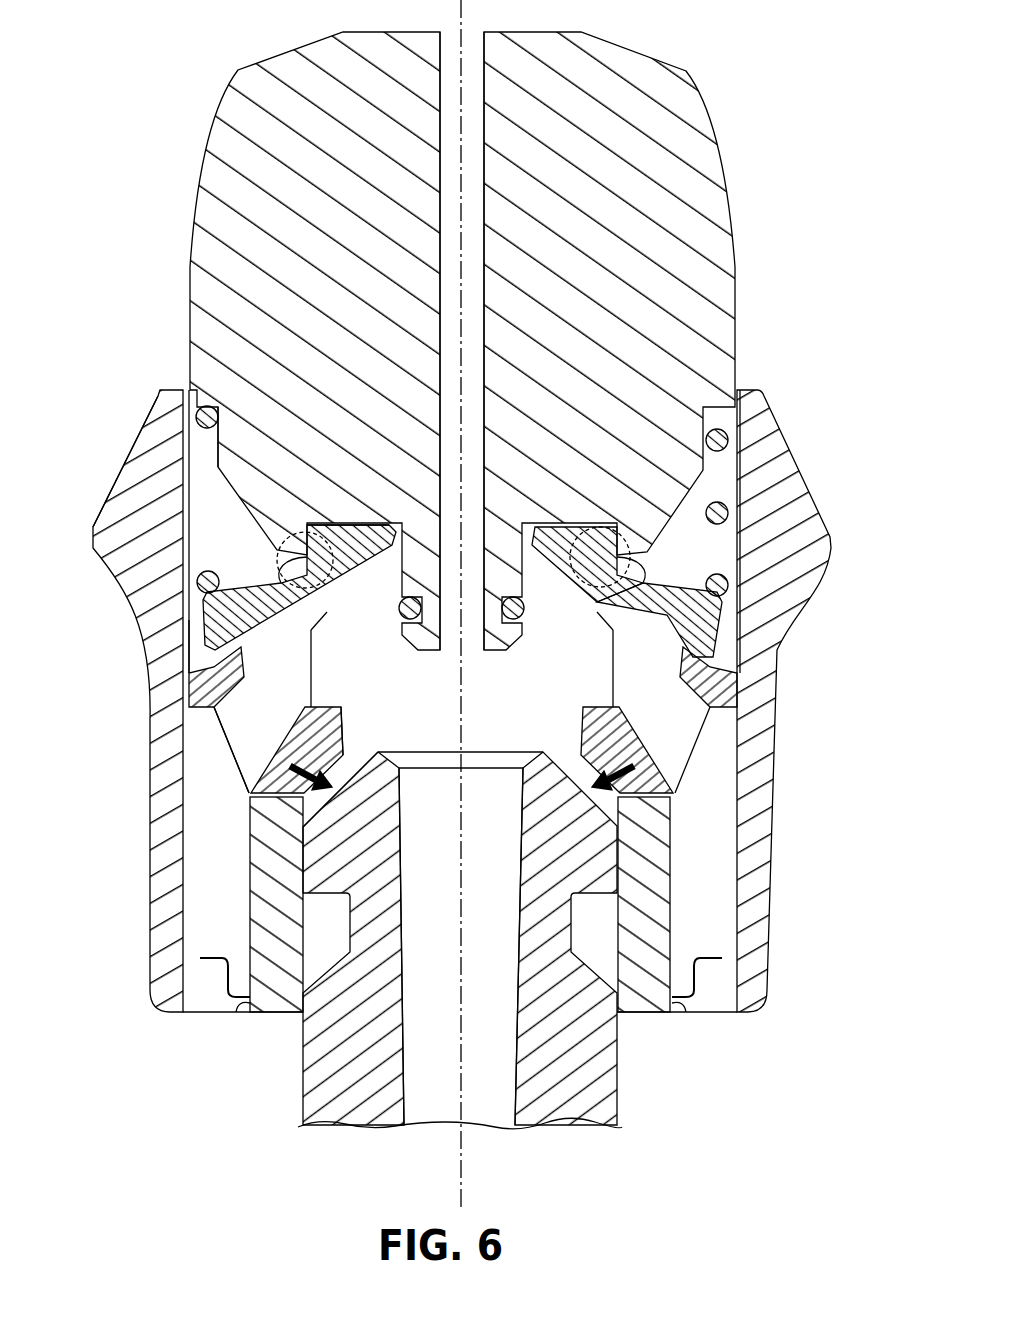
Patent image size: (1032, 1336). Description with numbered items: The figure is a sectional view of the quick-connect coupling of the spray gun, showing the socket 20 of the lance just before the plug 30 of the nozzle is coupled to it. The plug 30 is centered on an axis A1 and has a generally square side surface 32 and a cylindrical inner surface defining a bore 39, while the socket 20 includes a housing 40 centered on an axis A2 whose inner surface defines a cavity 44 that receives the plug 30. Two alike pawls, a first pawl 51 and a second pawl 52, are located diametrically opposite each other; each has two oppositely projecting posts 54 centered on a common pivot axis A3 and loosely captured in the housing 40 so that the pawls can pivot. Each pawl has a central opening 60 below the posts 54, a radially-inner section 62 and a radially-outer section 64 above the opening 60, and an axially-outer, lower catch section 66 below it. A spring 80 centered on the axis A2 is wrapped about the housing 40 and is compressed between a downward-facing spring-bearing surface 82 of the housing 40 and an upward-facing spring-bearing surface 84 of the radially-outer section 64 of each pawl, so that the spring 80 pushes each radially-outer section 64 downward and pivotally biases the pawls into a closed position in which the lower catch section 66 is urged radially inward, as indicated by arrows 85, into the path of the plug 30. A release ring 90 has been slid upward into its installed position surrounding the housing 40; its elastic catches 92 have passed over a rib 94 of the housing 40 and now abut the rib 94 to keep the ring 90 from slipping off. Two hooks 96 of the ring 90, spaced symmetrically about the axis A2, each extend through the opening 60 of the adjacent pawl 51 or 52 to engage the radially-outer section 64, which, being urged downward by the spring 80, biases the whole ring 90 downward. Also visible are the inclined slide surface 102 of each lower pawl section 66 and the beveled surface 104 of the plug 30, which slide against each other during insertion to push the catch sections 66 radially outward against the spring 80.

The socket 20 is at (760, 318).
The plug 30 is at (615, 1100).
The side surface 32 is at (617, 1027).
The bore 39 is at (500, 790).
The housing 40 is at (737, 371).
The cavity 44 is at (561, 675).
The first pawl 51 is at (193, 610).
The second pawl 52 is at (732, 598).
The posts 54 is at (267, 562).
The central opening 60 is at (247, 717).
The radially-inner section 62 is at (383, 565).
The radially-outer section 64 is at (200, 632).
The catch section 66 is at (247, 760).
The spring 80 is at (200, 575).
The spring-bearing surface 82 is at (205, 428).
The spring-bearing surface 84 is at (215, 565).
The arrows 85 is at (248, 790).
The release ring 90 is at (150, 418).
The elastic catches 92 is at (220, 980).
The rib 94 is at (697, 1017).
The hooks 96 is at (243, 667).
The slide surface 102 is at (330, 770).
The beveled surface 104 is at (350, 770).
The axis A1 is at (458, 1160).
The axis A2 is at (458, 1200).
The pivot axis A3 is at (292, 533).